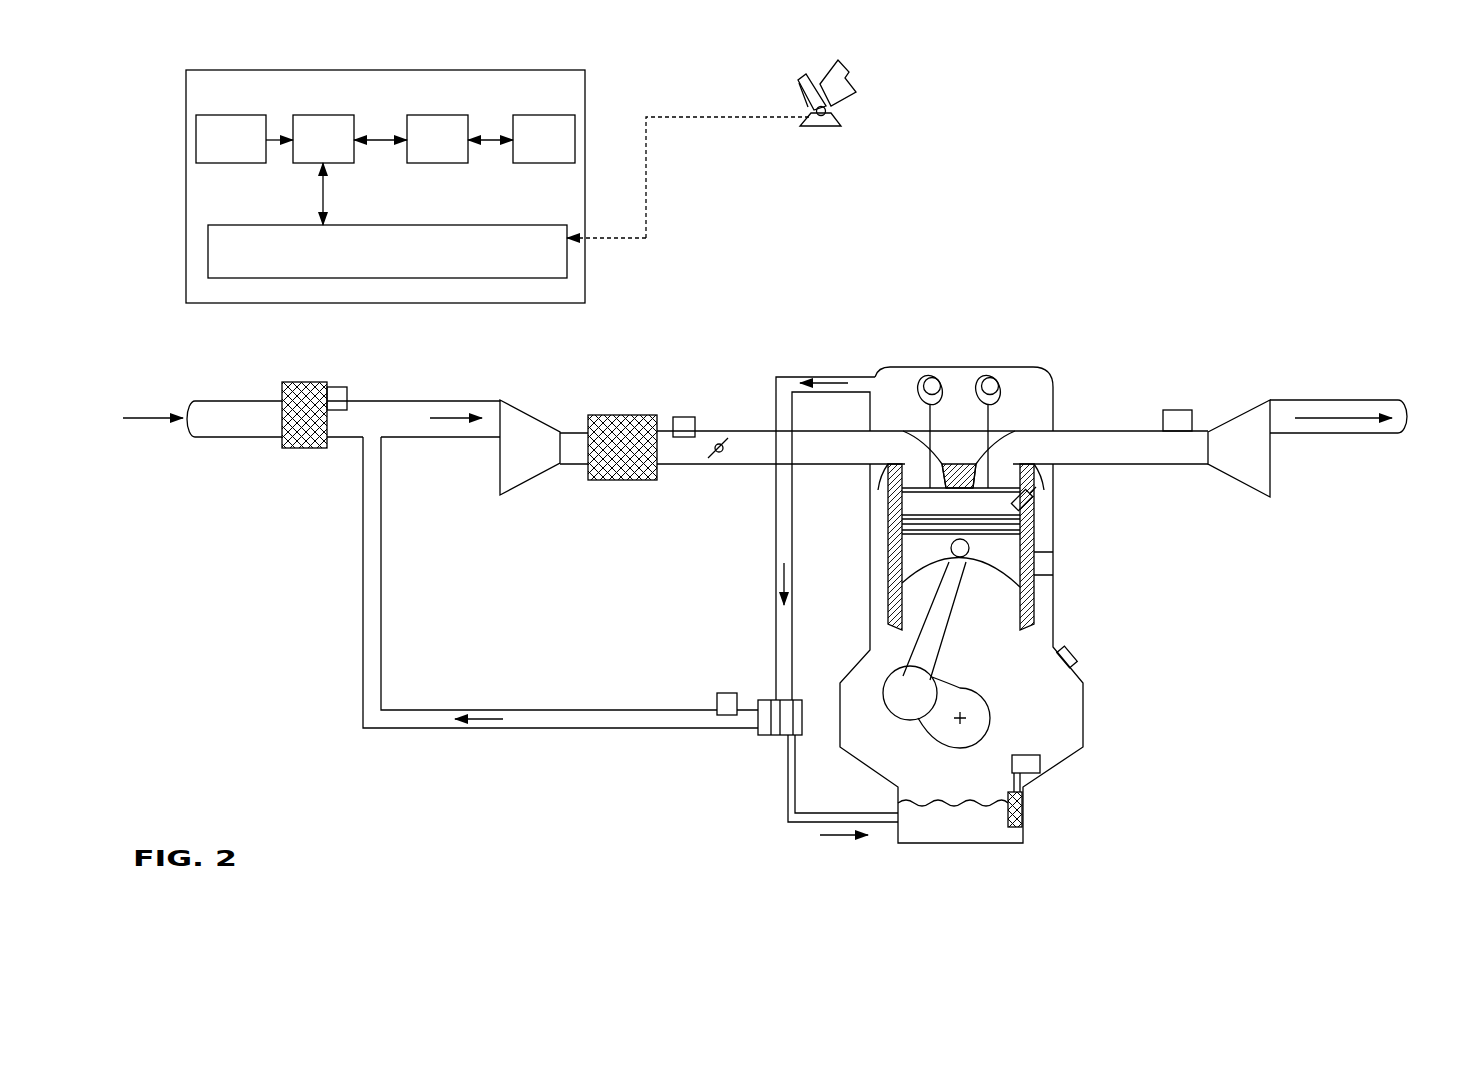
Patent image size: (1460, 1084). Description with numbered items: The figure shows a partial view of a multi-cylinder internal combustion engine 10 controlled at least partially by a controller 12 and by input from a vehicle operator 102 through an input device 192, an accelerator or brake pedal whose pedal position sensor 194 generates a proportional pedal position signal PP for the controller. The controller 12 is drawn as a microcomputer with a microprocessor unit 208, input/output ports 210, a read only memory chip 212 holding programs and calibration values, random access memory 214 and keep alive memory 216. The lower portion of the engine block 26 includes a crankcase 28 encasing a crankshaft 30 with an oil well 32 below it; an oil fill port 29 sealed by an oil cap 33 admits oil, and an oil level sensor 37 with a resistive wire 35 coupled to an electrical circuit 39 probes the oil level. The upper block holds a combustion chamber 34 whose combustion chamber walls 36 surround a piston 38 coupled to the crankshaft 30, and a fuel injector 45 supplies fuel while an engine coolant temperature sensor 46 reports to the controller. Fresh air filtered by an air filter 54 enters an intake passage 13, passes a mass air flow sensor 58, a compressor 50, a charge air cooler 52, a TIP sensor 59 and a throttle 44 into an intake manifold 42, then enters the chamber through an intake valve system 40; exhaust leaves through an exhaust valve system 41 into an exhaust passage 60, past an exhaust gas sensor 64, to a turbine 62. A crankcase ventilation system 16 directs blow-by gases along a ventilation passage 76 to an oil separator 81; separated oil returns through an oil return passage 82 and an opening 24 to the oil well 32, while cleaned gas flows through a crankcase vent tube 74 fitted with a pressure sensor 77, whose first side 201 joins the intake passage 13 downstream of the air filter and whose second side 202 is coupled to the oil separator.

The engine 10 is at (1313, 93).
The controller 12 is at (585, 70).
The intake passage 13 is at (207, 401).
The crankcase ventilation system 16 is at (1200, 318).
The opening 24 is at (977, 841).
The engine block 26 is at (1067, 829).
The crankcase 28 is at (1085, 748).
The cylinder block 29 is at (1057, 660).
The crankshaft 30 is at (908, 693).
The oil well 32 is at (958, 823).
The oil cap 33 is at (1067, 648).
The combustion chamber 34 is at (905, 500).
The resistive wire 35 is at (1023, 817).
The combustion chamber walls 36 is at (1035, 530).
The oil level sensor 37 is at (1008, 792).
The piston 38 is at (910, 548).
The electrical circuit 39 is at (1040, 762).
The intake valve system 40 is at (932, 446).
The exhaust valve system 41 is at (988, 446).
The intake manifold 42 is at (686, 464).
The throttle 44 is at (722, 458).
The fuel injector 45 is at (1040, 492).
The engine coolant temperature sensor 46 is at (1040, 565).
The compressor 50 is at (544, 447).
The charge air cooler 52 is at (617, 413).
The air filter 54 is at (300, 382).
The mass air flow sensor 58 is at (333, 387).
The TIP sensor 59 is at (682, 415).
The exhaust passage 60 is at (1085, 431).
The turbine 62 is at (1307, 448).
The exhaust gas sensor 64 is at (1192, 412).
The crankcase vent tube 74 is at (600, 728).
The ventilation passage 76 is at (777, 377).
The pressure sensor 77 is at (720, 693).
The oil separator 81 is at (803, 700).
The oil return passage 82 is at (797, 823).
The vehicle operator 102 is at (851, 72).
The input device 192 is at (797, 88).
The pedal position sensor 194 is at (832, 113).
The first side 201 is at (357, 446).
The second side 202 is at (783, 673).
The microprocessor unit 208 is at (328, 115).
The input/output ports 210 is at (388, 225).
The read only memory chip 212 is at (235, 115).
The random access memory 214 is at (437, 115).
The keep alive memory 216 is at (545, 115).